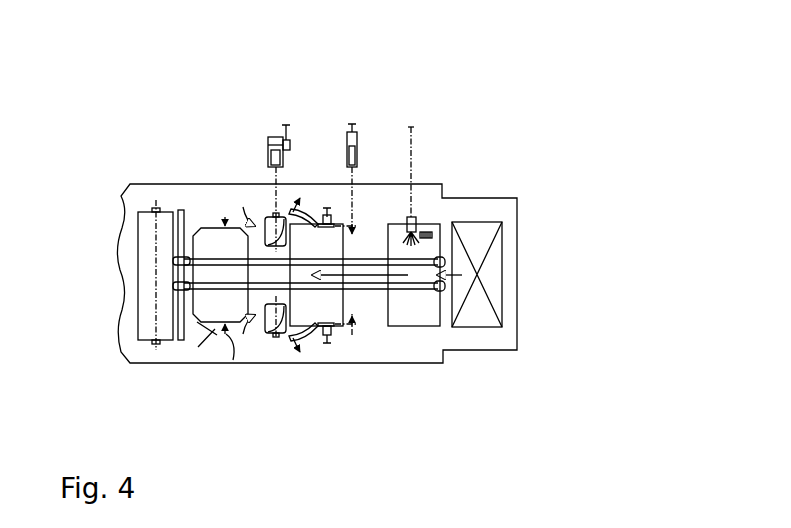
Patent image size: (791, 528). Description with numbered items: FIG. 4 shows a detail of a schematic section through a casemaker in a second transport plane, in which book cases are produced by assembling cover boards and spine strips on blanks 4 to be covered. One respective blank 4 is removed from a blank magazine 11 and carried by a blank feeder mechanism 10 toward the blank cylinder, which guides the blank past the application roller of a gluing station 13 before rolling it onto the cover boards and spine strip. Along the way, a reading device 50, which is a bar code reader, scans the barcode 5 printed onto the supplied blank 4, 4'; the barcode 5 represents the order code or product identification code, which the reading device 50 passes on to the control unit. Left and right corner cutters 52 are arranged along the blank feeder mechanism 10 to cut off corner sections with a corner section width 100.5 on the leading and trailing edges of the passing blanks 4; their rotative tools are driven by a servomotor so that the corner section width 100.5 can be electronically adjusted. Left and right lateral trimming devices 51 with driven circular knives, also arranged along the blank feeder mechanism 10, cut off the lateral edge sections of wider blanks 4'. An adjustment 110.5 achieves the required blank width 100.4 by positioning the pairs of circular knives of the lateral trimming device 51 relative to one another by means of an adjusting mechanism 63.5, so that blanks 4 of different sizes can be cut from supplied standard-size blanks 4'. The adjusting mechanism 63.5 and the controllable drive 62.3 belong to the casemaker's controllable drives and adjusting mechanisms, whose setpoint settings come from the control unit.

The blank to be covered 4 is at (216, 217).
The wider blank 4' is at (487, 283).
The barcode 5 is at (427, 232).
The blank feeder mechanism 10 is at (392, 347).
The blank magazine 11 is at (536, 197).
The gluing station 13 is at (143, 356).
The reading device 50 is at (409, 215).
The lateral trimming device 51 is at (304, 355).
The corner cutter 52 is at (248, 204).
The controllable drive 62.3 is at (275, 160).
The adjusting mechanism 63.5 is at (351, 160).
The blank width 100.4 is at (233, 360).
The corner section width 100.5 is at (198, 347).
The adjustment 110.5 is at (355, 325).